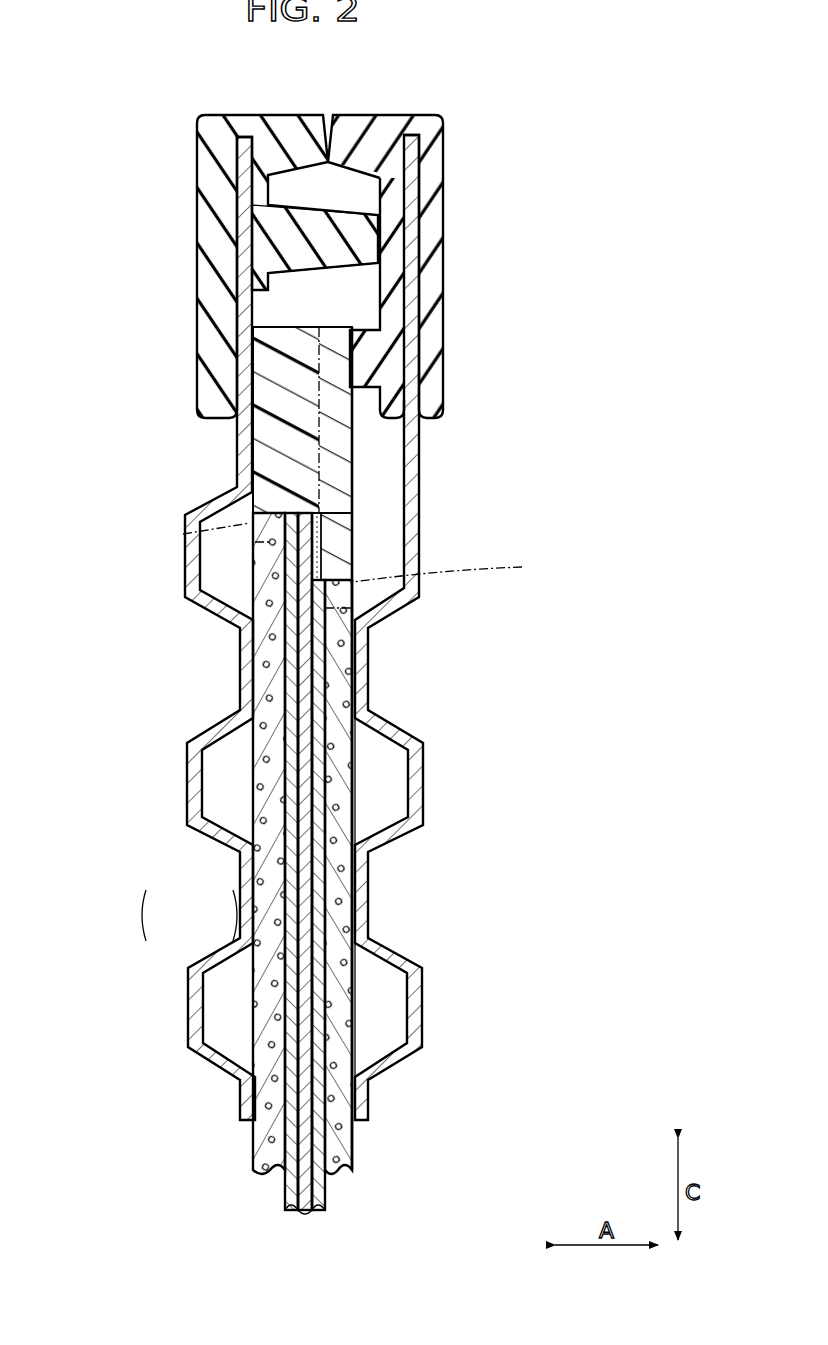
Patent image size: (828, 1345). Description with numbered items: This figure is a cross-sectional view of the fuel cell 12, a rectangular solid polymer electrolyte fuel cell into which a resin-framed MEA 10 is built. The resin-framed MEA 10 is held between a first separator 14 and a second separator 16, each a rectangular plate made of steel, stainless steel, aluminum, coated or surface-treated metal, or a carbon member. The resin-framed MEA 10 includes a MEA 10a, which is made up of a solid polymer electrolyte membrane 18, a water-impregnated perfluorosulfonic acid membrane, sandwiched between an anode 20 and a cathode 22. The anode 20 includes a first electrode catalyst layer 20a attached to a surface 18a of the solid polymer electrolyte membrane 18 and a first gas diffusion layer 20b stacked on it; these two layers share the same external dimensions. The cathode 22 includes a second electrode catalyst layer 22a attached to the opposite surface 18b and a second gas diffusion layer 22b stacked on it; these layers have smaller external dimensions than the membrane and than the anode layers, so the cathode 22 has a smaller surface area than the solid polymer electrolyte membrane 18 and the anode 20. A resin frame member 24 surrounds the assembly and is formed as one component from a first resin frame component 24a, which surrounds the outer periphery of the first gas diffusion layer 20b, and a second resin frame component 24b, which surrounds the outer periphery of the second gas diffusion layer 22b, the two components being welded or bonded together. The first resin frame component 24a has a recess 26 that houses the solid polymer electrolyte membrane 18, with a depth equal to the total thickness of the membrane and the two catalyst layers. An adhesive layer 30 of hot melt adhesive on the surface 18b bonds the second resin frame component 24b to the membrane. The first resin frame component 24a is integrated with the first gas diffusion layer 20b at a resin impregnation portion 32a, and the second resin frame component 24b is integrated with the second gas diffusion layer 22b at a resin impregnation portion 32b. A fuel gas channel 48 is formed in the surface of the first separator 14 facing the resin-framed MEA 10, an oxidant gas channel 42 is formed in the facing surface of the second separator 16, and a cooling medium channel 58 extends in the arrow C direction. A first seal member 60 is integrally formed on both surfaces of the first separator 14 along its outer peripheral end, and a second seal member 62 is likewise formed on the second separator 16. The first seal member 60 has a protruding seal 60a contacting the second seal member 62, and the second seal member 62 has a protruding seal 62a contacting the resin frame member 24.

The fuel cell 12 is at (404, 63).
The first seal member 60 is at (196, 149).
The protruding seal 60a is at (375, 248).
The second seal member 62 is at (446, 136).
The protruding seal 62a is at (365, 356).
The resin frame member 24 is at (313, 422).
The first resin frame component 24a is at (285, 377).
The second resin frame component 24b is at (333, 445).
The adhesive layer 30 is at (352, 523).
The resin-framed MEA 10 is at (378, 583).
The MEA 10a is at (356, 744).
The resin impregnation portion 32a is at (183, 534).
The resin impregnation portion 32b is at (452, 580).
The recess 26 is at (293, 550).
The first separator 14 is at (196, 830).
The second separator 16 is at (415, 830).
The fuel gas channel 48 is at (215, 775).
The oxidant gas channel 42 is at (392, 776).
The cooling medium channel 58 is at (195, 873).
The solid polymer electrolyte membrane 18 is at (307, 890).
The surface 18a is at (298, 1143).
The surface 18b is at (323, 1133).
The anode 20 is at (206, 861).
The first electrode catalyst layer 20a is at (288, 690).
The first gas diffusion layer 20b is at (267, 645).
The cathode 22 is at (401, 895).
The second electrode catalyst layer 22a is at (322, 690).
The second gas diffusion layer 22b is at (342, 645).